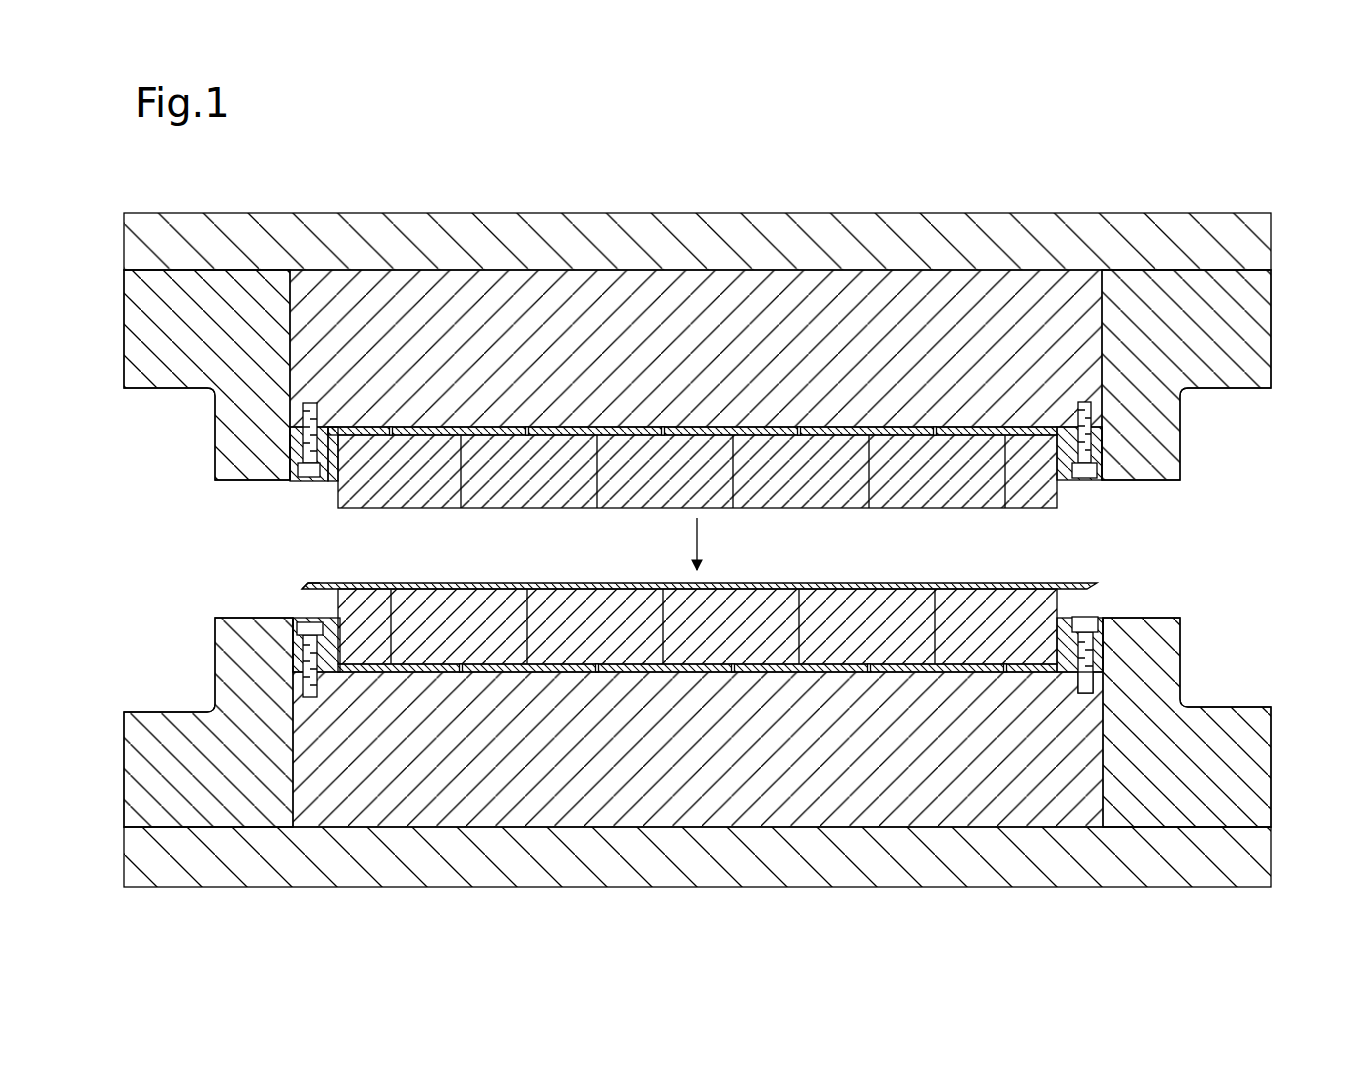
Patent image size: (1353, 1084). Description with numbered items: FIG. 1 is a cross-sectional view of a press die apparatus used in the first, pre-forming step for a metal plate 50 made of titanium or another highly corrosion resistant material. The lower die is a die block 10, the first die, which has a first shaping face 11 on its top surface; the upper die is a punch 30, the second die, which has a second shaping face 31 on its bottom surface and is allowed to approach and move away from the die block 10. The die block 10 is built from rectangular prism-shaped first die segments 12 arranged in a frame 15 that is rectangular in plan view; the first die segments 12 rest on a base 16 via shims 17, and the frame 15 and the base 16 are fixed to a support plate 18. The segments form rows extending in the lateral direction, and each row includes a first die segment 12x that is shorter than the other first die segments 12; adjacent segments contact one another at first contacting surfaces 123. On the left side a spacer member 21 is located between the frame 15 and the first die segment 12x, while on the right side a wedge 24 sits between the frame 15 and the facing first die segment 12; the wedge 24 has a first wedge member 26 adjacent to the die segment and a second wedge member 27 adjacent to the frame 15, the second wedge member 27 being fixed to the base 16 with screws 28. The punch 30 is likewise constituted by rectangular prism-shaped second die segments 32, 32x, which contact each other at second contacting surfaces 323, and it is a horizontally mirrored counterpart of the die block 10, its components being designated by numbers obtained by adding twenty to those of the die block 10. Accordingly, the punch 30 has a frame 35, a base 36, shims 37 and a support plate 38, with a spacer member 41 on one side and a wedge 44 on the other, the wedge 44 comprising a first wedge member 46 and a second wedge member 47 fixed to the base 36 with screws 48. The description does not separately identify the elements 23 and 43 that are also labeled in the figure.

The die block 10 is at (381, 579).
The first shaping face 11 is at (1023, 583).
The first die segments 12 is at (573, 597).
The first die segment 12x is at (355, 583).
The first contacting surfaces 123 is at (522, 640).
The frame 15 is at (216, 654).
The base 16 is at (697, 774).
The shims 17 is at (578, 674).
The support plate 18 is at (762, 877).
The spacer member 21 is at (330, 620).
The holding ring 23 is at (293, 683).
The wedge 24 is at (1128, 609).
The first wedge member 26 is at (1068, 616).
The second wedge member 27 is at (1150, 623).
The screws 28 is at (1100, 673).
The punch 30 is at (425, 514).
The second shaping face 31 is at (912, 510).
The second die segments 32 is at (357, 442).
The second die segment 32x is at (1040, 497).
The second contacting surfaces 323 is at (589, 452).
The frame 35 is at (216, 437).
The base 36 is at (697, 328).
The shims 37 is at (783, 425).
The support plate 38 is at (765, 222).
The spacer member 41 is at (1060, 424).
The bolt 43 is at (1092, 412).
The wedge 44 is at (276, 475).
The first wedge member 46 is at (327, 483).
The second wedge member 47 is at (283, 463).
The screws 48 is at (300, 418).
The metal plate 50 is at (533, 582).